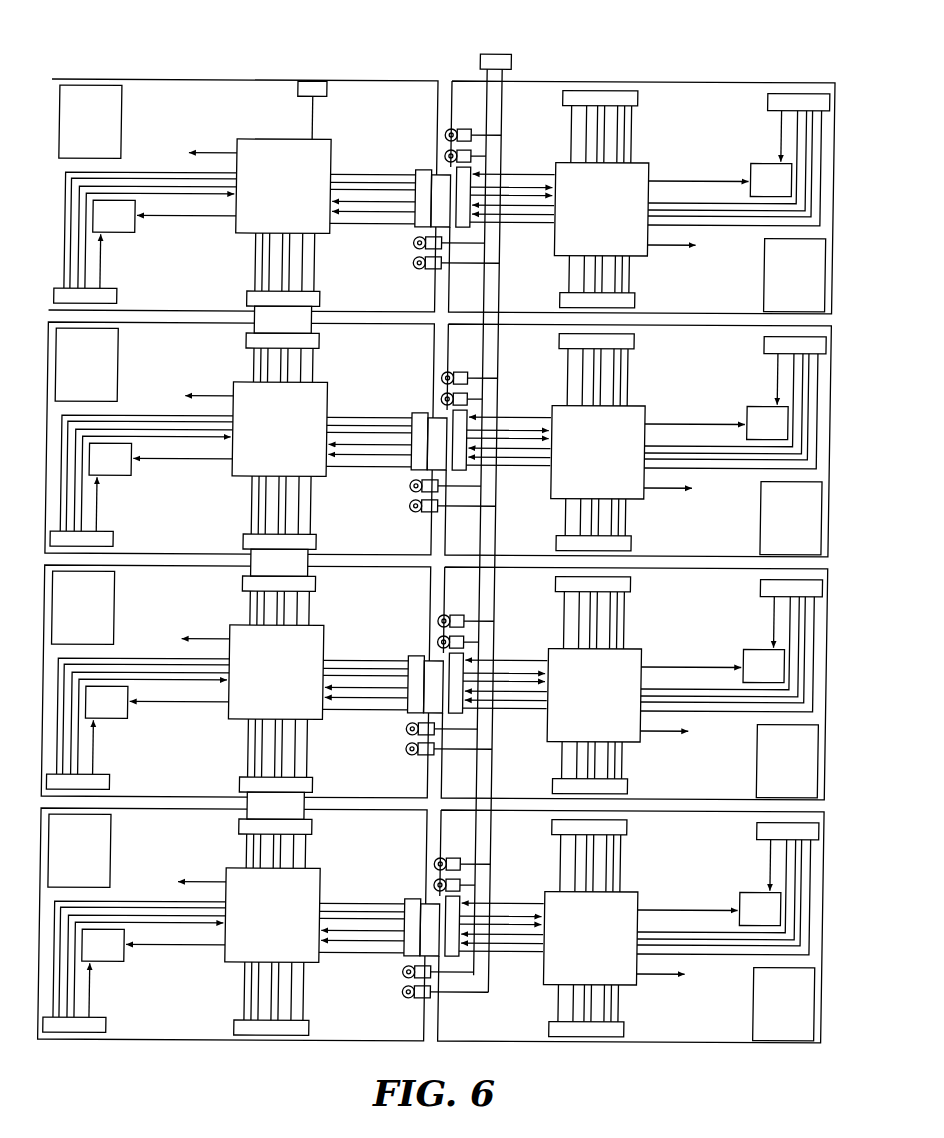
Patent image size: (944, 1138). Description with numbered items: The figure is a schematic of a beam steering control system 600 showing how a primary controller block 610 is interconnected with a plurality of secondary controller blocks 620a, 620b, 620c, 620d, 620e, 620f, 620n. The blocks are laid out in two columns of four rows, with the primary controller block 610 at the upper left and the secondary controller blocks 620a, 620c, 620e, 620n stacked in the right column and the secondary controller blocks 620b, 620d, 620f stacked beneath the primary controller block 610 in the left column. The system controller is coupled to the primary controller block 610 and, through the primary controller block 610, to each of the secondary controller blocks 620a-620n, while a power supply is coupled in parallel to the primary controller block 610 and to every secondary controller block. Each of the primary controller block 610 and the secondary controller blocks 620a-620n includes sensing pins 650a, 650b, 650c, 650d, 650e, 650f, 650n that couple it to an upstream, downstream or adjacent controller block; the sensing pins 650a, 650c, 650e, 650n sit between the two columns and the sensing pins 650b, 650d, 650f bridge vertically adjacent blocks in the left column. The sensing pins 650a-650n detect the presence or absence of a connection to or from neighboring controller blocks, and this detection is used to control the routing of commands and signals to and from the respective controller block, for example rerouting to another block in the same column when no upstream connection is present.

The beam steering control system 600 is at (437, 521).
The primary controller block 610 is at (202, 128).
The secondary controller block 620a is at (735, 131).
The secondary controller block 620b is at (239, 438).
The secondary controller block 620c is at (638, 440).
The secondary controller block 620d is at (235, 681).
The secondary controller block 620e is at (634, 683).
The secondary controller block 620f is at (232, 924).
The secondary controller block 620n is at (631, 926).
The sensing pins 650a is at (455, 189).
The sensing pins 650b is at (235, 322).
The sensing pins 650c is at (452, 432).
The sensing pins 650d is at (232, 565).
The sensing pins 650e is at (444, 675).
The sensing pins 650f is at (225, 809).
The sensing pins 650n is at (437, 917).